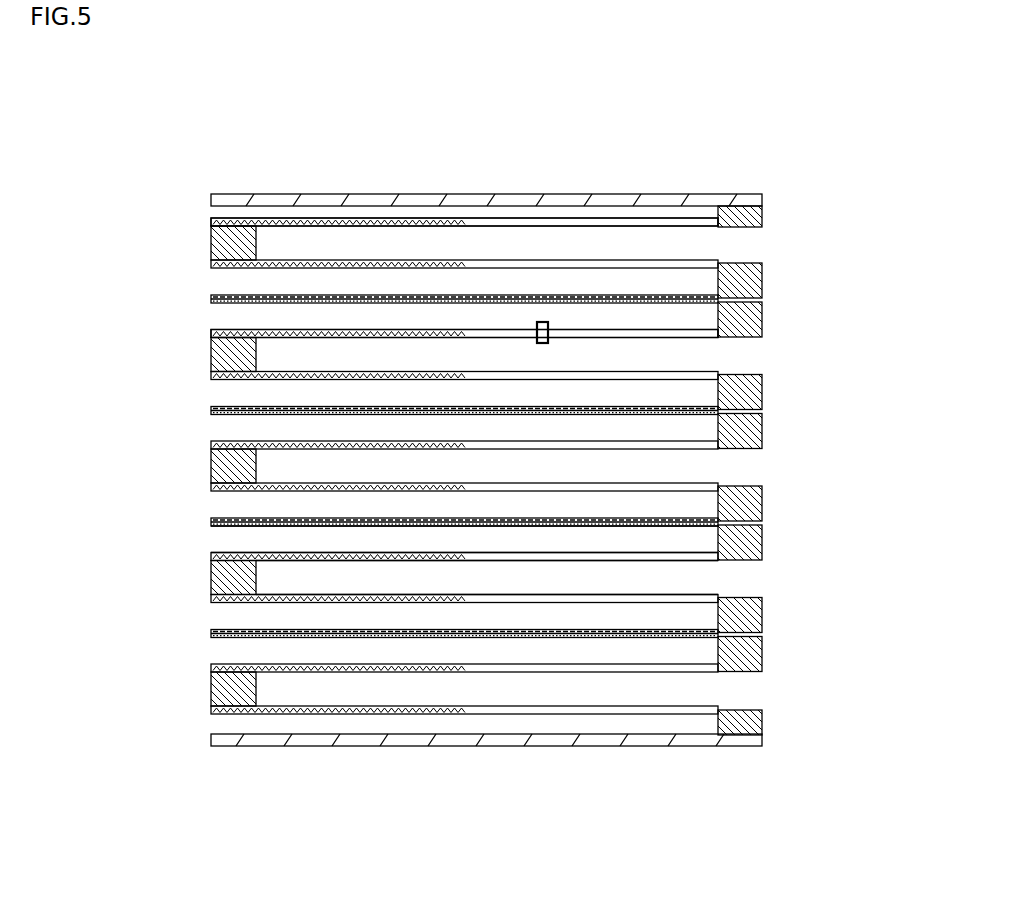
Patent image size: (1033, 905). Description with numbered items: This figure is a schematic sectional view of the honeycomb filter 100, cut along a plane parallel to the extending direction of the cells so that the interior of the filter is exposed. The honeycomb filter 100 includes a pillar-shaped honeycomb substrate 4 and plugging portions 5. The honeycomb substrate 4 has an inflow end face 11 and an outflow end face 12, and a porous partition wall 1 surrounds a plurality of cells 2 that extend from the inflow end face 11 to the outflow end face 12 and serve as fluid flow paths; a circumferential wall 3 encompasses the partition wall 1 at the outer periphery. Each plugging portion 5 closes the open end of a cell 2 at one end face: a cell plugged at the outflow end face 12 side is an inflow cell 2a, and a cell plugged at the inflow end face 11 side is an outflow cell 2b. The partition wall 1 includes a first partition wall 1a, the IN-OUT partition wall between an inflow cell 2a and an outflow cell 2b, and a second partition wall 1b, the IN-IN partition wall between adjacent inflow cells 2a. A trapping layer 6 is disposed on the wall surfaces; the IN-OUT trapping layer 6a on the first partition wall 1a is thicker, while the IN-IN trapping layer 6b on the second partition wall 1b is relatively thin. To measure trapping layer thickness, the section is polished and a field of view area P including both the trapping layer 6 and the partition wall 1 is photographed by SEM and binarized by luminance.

The honeycomb filter 100 is at (815, 90).
The circumferential wall 3 is at (392, 203).
The partition wall 1 is at (400, 466).
The first partition wall 1a is at (263, 603).
The second partition wall 1b is at (270, 637).
The cell 2 is at (480, 560).
The inflow cell 2a is at (265, 537).
The outflow cell 2b is at (702, 575).
The honeycomb substrate 4 is at (193, 325).
The plugging portion 5 is at (209, 468).
The trapping layer 6 is at (464, 526).
The IN-OUT trapping layer 6a is at (380, 557).
The IN-IN trapping layer 6b is at (600, 633).
The inflow end face 11 is at (194, 209).
The outflow end face 12 is at (771, 216).
The field of view area P is at (548, 323).